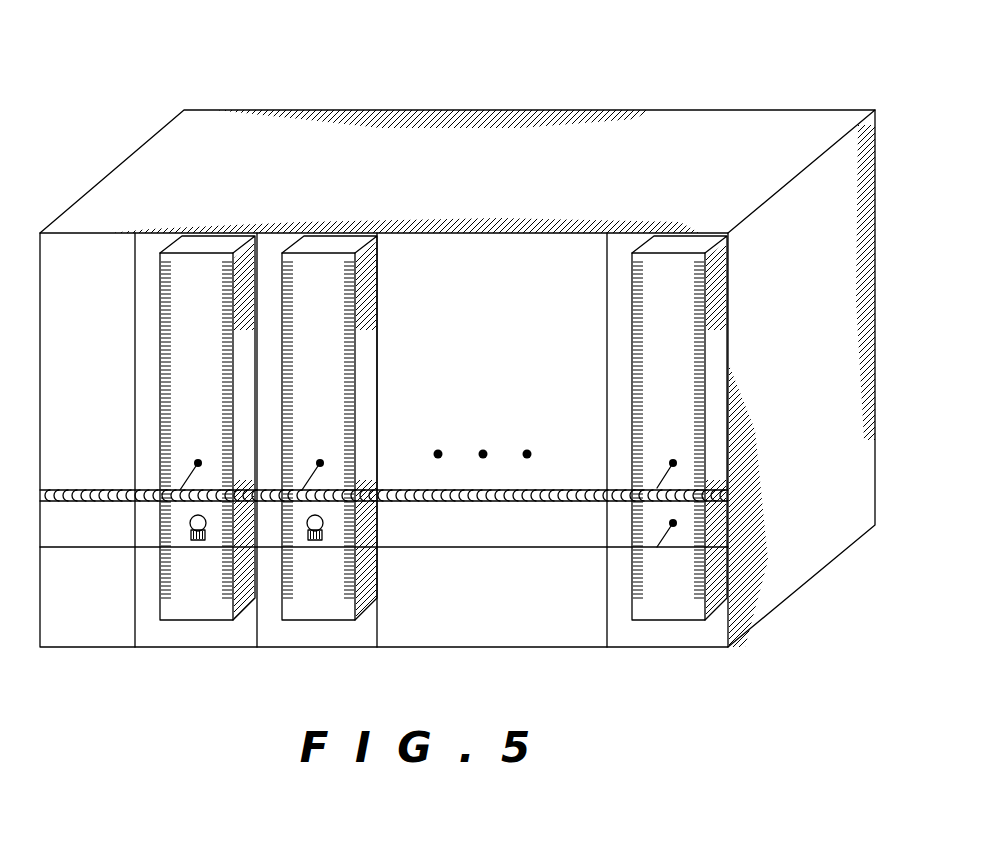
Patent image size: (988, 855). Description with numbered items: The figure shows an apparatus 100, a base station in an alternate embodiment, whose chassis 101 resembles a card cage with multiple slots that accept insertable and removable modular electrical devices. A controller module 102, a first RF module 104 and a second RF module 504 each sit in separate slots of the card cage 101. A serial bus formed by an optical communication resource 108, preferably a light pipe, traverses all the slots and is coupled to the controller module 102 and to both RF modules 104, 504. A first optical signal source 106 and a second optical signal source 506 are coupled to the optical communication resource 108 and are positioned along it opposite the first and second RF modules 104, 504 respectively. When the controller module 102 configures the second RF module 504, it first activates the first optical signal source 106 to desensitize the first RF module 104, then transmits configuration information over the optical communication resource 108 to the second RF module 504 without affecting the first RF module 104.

The apparatus 100 is at (165, 28).
The chassis 101 is at (713, 145).
The controller module 102 is at (645, 310).
The first RF module 104 is at (170, 308).
The first optical signal source 106 is at (204, 542).
The optical communication resource 108 is at (90, 487).
The second RF module 504 is at (340, 308).
The second optical signal source 506 is at (319, 542).